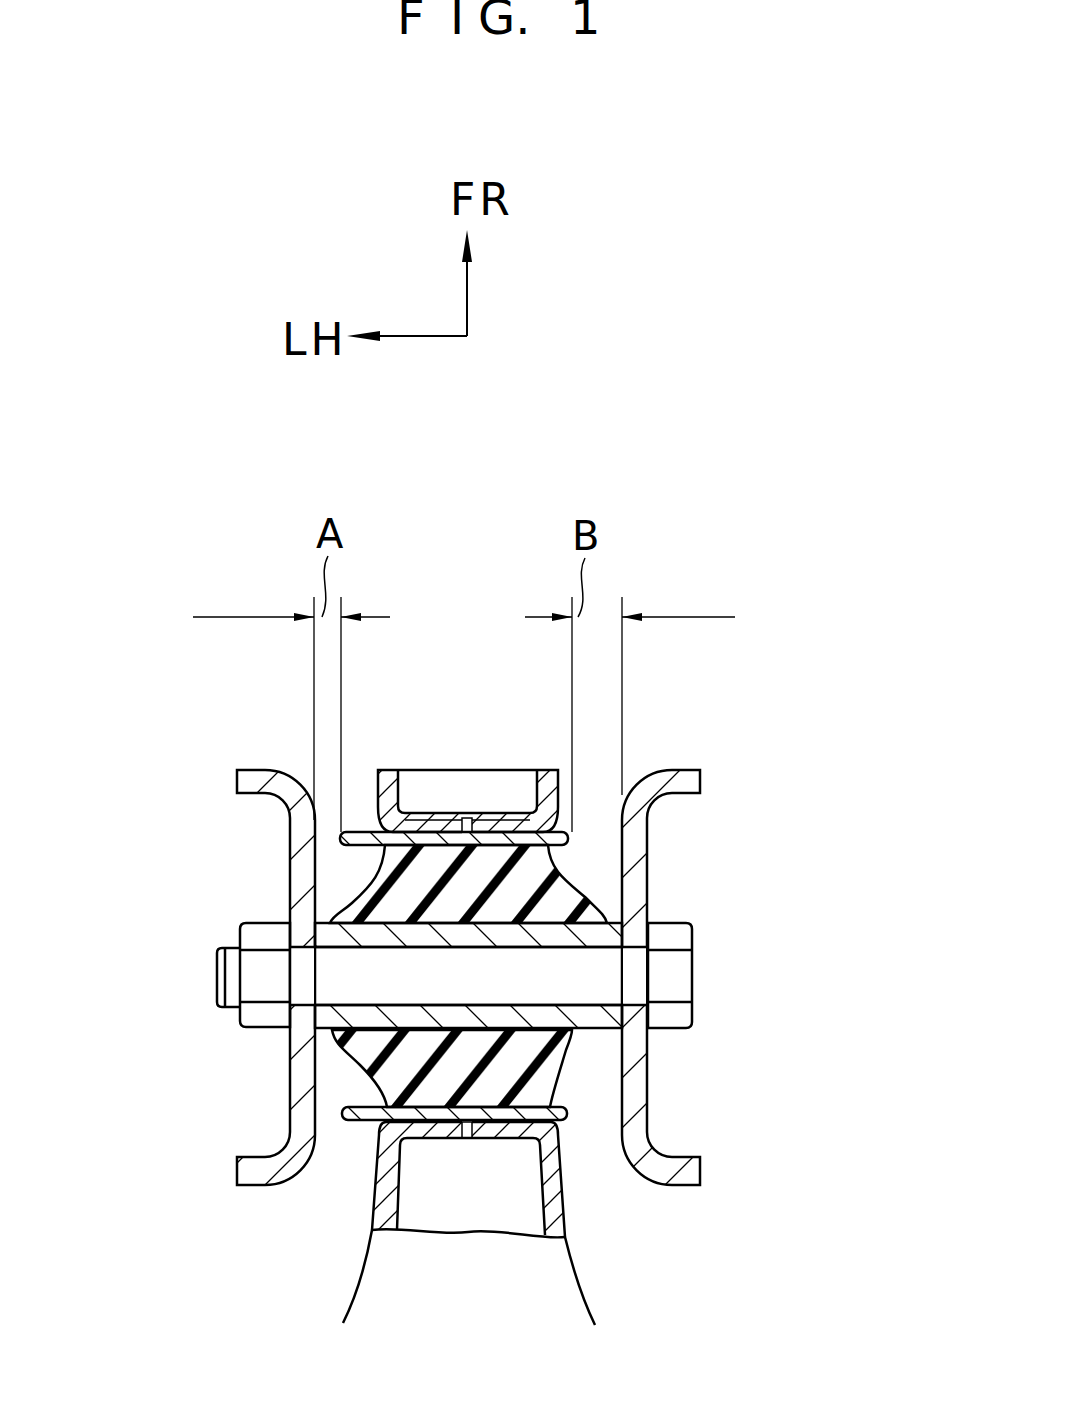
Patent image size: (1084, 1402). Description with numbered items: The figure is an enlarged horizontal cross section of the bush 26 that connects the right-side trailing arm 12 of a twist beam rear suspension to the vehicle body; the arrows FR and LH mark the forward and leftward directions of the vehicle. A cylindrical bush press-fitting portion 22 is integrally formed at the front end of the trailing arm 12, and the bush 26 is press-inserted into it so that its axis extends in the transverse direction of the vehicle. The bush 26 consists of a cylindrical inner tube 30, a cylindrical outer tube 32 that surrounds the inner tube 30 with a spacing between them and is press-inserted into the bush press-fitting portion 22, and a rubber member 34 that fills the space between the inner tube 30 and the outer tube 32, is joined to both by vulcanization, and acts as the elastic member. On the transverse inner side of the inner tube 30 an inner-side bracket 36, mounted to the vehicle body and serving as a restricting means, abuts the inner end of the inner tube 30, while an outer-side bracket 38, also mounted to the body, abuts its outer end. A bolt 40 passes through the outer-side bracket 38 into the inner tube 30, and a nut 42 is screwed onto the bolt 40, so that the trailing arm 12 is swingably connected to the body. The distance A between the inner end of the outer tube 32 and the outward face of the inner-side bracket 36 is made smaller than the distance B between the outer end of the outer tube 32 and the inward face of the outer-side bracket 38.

The trailing arm 12 is at (585, 1292).
The bush press-fitting portion 22 is at (477, 768).
The bush 26 is at (634, 976).
The inner tube 30 is at (580, 935).
The outer tube 32 is at (572, 838).
The rubber member 34 is at (568, 1052).
The inner-side bracket 36 is at (237, 781).
The outer-side bracket 38 is at (700, 784).
The bolt 40 is at (218, 1004).
The nut 42 is at (248, 1028).